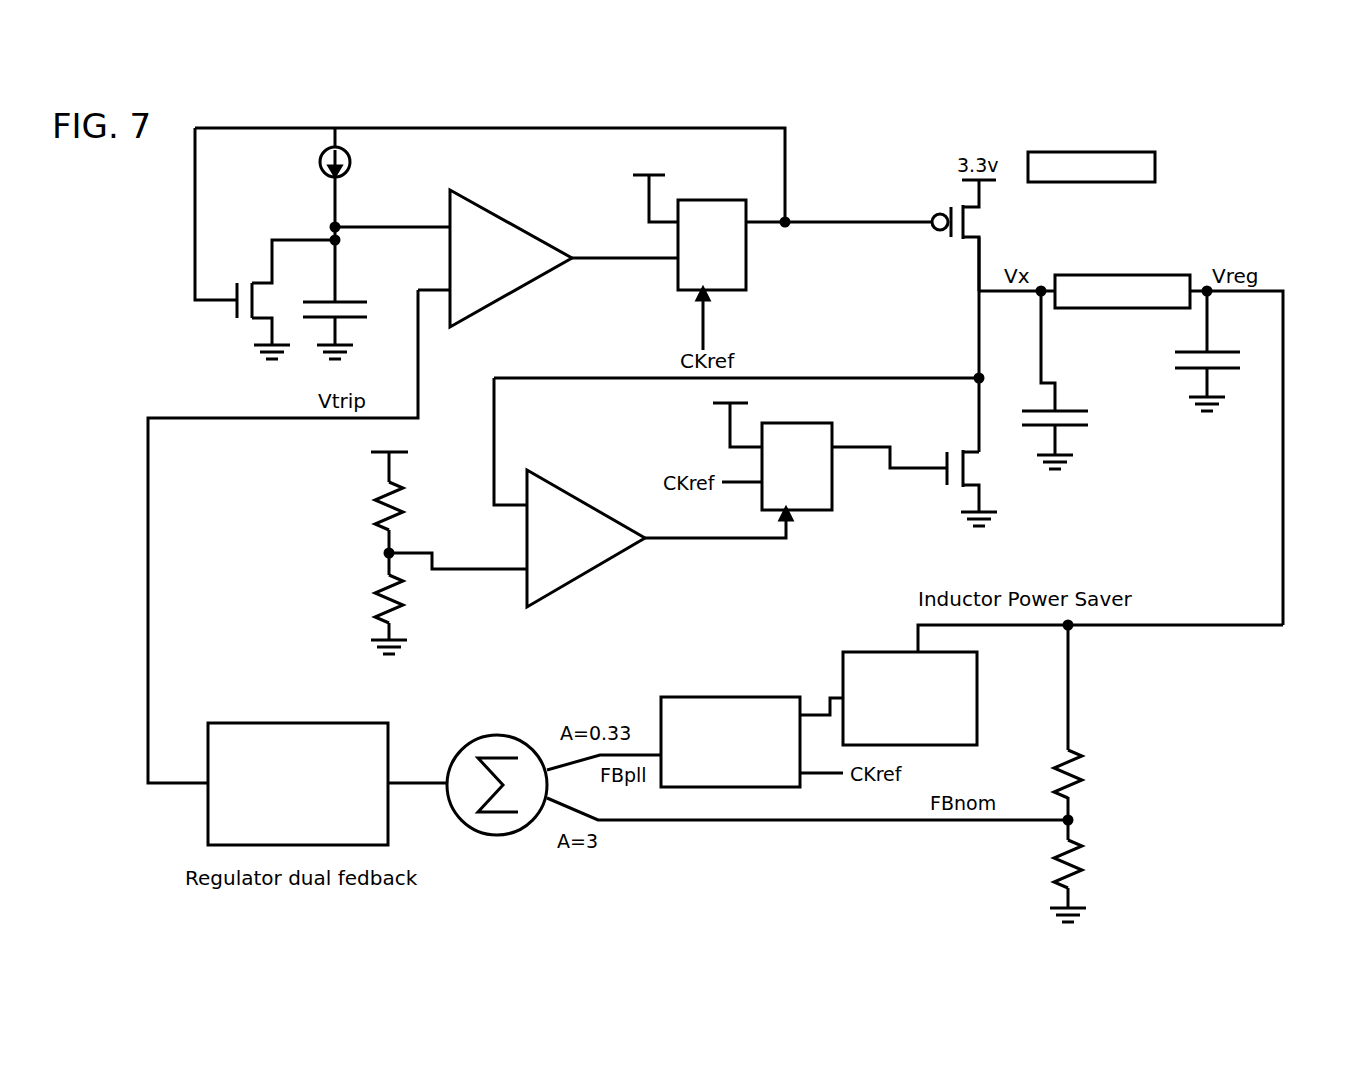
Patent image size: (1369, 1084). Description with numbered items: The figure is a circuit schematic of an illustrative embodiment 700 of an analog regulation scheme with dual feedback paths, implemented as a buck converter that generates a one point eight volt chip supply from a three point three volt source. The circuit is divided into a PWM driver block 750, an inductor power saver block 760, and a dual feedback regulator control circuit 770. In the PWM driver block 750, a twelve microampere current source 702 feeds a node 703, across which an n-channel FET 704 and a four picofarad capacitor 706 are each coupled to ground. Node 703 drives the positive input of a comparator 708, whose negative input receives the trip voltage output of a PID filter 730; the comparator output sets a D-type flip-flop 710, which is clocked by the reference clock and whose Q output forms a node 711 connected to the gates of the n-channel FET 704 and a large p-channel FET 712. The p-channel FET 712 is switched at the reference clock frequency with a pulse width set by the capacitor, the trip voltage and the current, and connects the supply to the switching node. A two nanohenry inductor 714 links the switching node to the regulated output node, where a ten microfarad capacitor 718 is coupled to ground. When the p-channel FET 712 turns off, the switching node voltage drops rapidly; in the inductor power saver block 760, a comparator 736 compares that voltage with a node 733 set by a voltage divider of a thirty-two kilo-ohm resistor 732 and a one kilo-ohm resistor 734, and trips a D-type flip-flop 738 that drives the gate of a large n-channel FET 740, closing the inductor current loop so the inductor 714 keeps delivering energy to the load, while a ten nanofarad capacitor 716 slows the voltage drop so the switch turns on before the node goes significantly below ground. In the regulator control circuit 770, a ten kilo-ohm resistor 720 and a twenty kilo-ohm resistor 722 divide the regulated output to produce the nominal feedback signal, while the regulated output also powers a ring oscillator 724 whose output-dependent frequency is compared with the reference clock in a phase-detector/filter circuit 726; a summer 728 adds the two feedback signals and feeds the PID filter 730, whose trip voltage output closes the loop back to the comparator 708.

The illustrative embodiment 700 is at (1262, 168).
The current source 702 is at (318, 162).
The node 703 is at (385, 227).
The n-channel FET 704 is at (237, 305).
The capacitor 706 is at (340, 302).
The comparator 708 is at (505, 222).
The D-type flip-flop 710 is at (700, 200).
The node 711 is at (818, 222).
The p-channel FET 712 is at (968, 222).
The inductor 714 is at (1125, 275).
The capacitor 716 is at (1055, 408).
The capacitor 718 is at (1207, 348).
The resistor 720 is at (1068, 755).
The resistor 722 is at (1068, 865).
The ring oscillator 724 is at (880, 665).
The phase-detector/filter circuit 726 is at (690, 710).
The summer 728 is at (505, 738).
The PID filter 730 is at (268, 723).
The resistor 732 is at (375, 505).
The node 733 is at (452, 569).
The resistor 734 is at (375, 600).
The comparator 736 is at (595, 578).
The D-type flip-flop 738 is at (810, 423).
The n-channel FET 740 is at (945, 478).
The PWM driver block 750 is at (1115, 152).
The inductor power saver block 760 is at (1103, 545).
The dual feedback regulator control circuit 770 is at (1190, 706).